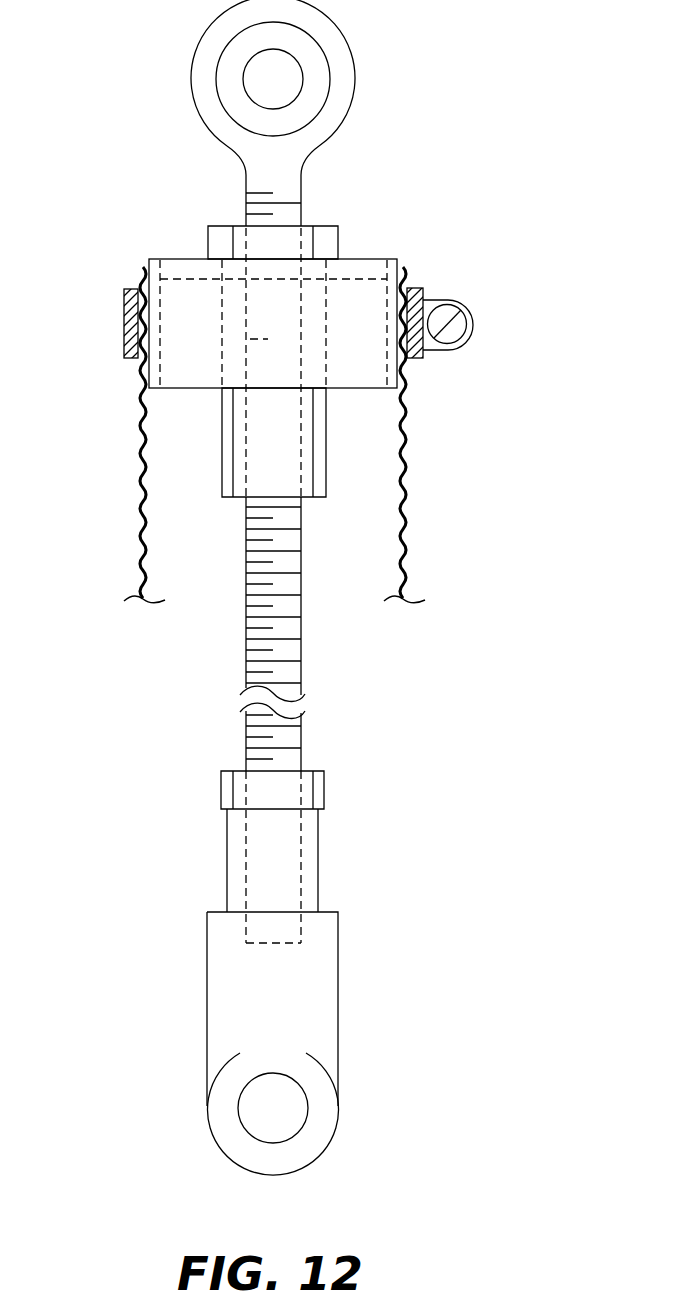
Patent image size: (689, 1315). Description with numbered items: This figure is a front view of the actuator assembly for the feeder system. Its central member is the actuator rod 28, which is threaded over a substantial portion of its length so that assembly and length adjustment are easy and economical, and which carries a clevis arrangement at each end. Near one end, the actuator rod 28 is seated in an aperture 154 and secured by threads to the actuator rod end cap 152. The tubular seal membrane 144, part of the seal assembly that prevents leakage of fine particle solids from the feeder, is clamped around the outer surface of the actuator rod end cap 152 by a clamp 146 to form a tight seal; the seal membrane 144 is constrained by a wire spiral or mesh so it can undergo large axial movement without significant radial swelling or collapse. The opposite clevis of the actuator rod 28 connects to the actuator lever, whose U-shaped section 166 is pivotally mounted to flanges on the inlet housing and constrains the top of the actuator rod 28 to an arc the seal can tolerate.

The U-shaped section 166 is at (352, 80).
The actuator rod end cap 152 is at (367, 265).
The aperture 154 is at (248, 338).
The clamp 146 is at (128, 330).
The tubular seal membrane 144 is at (138, 462).
The actuator rod 28 is at (296, 649).